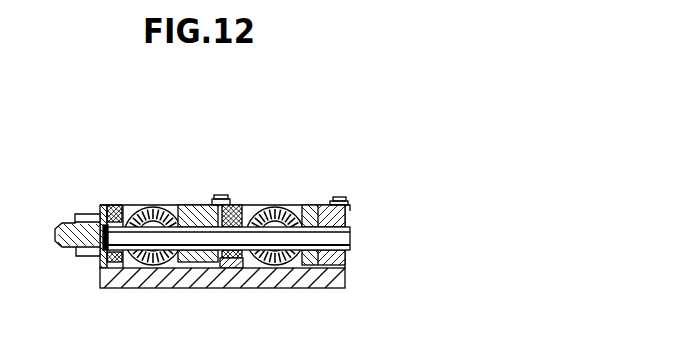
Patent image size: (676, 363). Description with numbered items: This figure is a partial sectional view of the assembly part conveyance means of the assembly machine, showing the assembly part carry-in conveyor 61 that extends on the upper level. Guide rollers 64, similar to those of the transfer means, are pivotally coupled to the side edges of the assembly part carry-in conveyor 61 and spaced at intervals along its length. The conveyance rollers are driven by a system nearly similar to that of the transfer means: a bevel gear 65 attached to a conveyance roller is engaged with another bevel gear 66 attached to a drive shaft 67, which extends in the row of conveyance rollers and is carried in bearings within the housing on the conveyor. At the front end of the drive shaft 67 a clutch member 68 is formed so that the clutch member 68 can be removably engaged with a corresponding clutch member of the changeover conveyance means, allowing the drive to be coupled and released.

The assembly part carry-in conveyor 61 is at (287, 150).
The guide roller 64 is at (222, 194).
The bevel gear 65 is at (152, 205).
The bevel gear 66 is at (178, 205).
The drive shaft 67 is at (320, 289).
The clutch member 68 is at (80, 213).